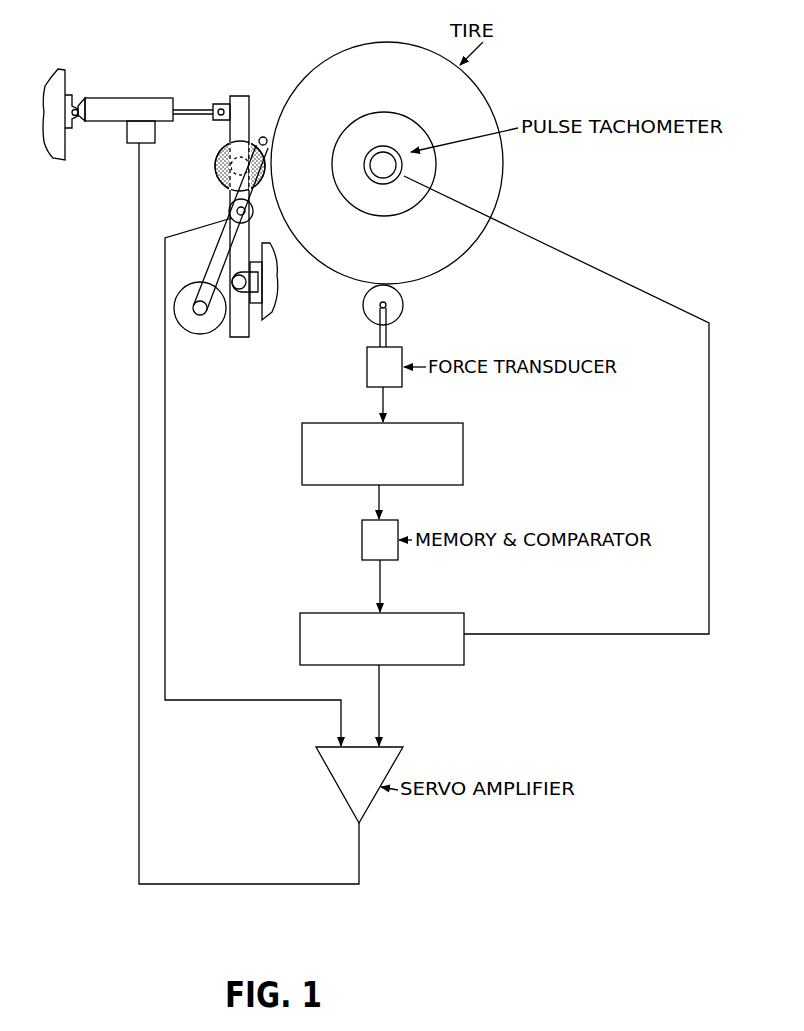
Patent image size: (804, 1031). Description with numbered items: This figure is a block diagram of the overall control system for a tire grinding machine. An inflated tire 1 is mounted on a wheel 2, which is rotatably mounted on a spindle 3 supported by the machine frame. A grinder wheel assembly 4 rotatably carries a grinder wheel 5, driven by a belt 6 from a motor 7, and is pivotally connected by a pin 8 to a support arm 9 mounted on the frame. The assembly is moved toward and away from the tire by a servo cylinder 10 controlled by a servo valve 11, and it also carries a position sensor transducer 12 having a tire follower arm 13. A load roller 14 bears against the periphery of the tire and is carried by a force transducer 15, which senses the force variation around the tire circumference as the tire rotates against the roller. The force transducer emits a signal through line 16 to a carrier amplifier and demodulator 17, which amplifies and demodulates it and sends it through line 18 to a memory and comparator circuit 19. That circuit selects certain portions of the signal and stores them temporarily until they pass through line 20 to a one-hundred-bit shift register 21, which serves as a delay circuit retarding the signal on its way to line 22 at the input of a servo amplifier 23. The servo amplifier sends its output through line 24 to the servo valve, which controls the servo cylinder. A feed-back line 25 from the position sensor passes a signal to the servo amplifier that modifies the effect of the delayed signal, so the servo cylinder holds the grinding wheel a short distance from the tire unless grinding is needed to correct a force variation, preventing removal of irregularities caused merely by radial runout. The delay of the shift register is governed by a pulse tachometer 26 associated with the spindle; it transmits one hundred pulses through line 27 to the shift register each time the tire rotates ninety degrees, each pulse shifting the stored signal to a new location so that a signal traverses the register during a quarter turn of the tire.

The inflated tire 1 is at (332, 57).
The wheel 2 is at (414, 123).
The spindle 3 is at (380, 172).
The grinder wheel assembly 4 is at (226, 188).
The grinder wheel 5 is at (221, 158).
The belt 6 is at (215, 246).
The motor 7 is at (200, 334).
The pin 8 is at (245, 293).
The support arm 9 is at (263, 285).
The servo cylinder 10 is at (119, 102).
The servo valve 11 is at (132, 143).
The position sensor transducer 12 is at (254, 211).
The tire follower arm 13 is at (266, 158).
The load roller 14 is at (400, 313).
The force transducer 15 is at (367, 365).
The line 16 is at (381, 401).
The carrier amplifier and demodulator 17 is at (463, 438).
The line 18 is at (379, 511).
The memory and comparator circuit 19 is at (362, 549).
The line 20 is at (380, 592).
The shift register 21 is at (459, 613).
The line 22 is at (380, 718).
The servo amplifier 23 is at (350, 790).
The line 24 is at (198, 884).
The feed-back line 25 is at (166, 561).
The pulse tachometer 26 is at (369, 149).
The line 27 is at (658, 298).